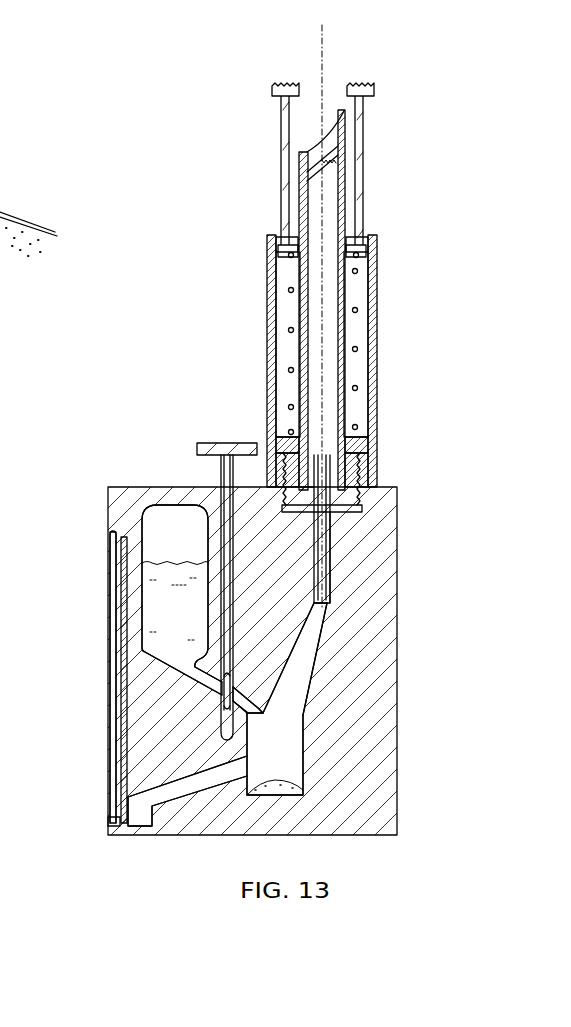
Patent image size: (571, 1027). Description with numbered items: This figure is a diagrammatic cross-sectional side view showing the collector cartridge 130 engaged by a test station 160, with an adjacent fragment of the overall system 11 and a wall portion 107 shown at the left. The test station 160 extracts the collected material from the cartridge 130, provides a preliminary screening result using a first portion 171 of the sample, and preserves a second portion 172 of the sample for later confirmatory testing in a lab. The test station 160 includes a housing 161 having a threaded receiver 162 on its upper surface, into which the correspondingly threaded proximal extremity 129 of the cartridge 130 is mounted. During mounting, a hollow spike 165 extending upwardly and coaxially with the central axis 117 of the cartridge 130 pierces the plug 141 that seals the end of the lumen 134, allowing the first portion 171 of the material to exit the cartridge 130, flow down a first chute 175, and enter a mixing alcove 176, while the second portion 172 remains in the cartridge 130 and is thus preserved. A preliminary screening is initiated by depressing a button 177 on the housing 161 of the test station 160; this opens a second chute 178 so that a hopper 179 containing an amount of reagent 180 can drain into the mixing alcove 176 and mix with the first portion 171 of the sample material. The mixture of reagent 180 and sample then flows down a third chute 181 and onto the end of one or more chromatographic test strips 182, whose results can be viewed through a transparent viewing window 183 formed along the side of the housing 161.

The fluid delivery system 11 is at (16, 322).
The container wall 107 is at (13, 211).
The central axis 117 is at (323, 45).
The threaded proximal extremity 129 is at (350, 468).
The cartridge 130 is at (231, 212).
The lumen 134 is at (328, 338).
The plug 141 is at (378, 505).
The test station 160 is at (79, 459).
The housing 161 is at (398, 712).
The threaded receiver 162 is at (378, 463).
The hollow spike 165 is at (338, 467).
The first portion 171 is at (303, 787).
The second portion 172 is at (283, 490).
The first chute 175 is at (307, 677).
The mixing alcove 176 is at (299, 742).
The button 177 is at (200, 441).
The second chute 178 is at (205, 682).
The hopper 179 is at (170, 505).
The reagent 180 is at (191, 619).
The third chute 181 is at (205, 773).
The chromatographic test strips 182 is at (115, 737).
The transparent viewing window 183 is at (110, 677).